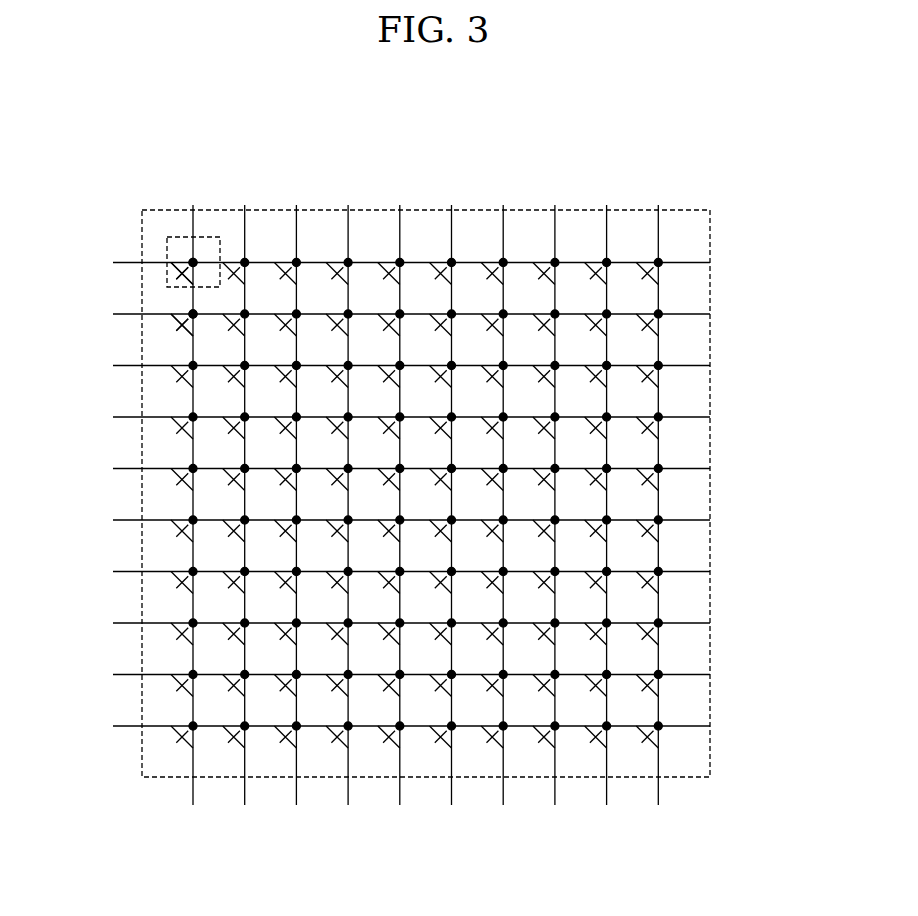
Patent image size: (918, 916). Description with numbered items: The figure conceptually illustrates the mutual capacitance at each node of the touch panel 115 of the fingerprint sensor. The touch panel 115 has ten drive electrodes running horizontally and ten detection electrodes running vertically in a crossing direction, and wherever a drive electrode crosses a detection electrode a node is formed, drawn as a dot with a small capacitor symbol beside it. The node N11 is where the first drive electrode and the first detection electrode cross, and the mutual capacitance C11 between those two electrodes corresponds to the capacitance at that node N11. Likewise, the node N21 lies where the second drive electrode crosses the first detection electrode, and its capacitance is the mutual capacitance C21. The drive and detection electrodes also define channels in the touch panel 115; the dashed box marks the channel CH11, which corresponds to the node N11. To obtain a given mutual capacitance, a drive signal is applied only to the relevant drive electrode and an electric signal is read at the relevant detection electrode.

The touch panel 115 is at (710, 210).
The channel CH11 is at (173, 233).
The node N11 is at (191, 261).
The node N21 is at (191, 313).
The mutual capacitance C11 is at (180, 278).
The mutual capacitance C21 is at (182, 326).